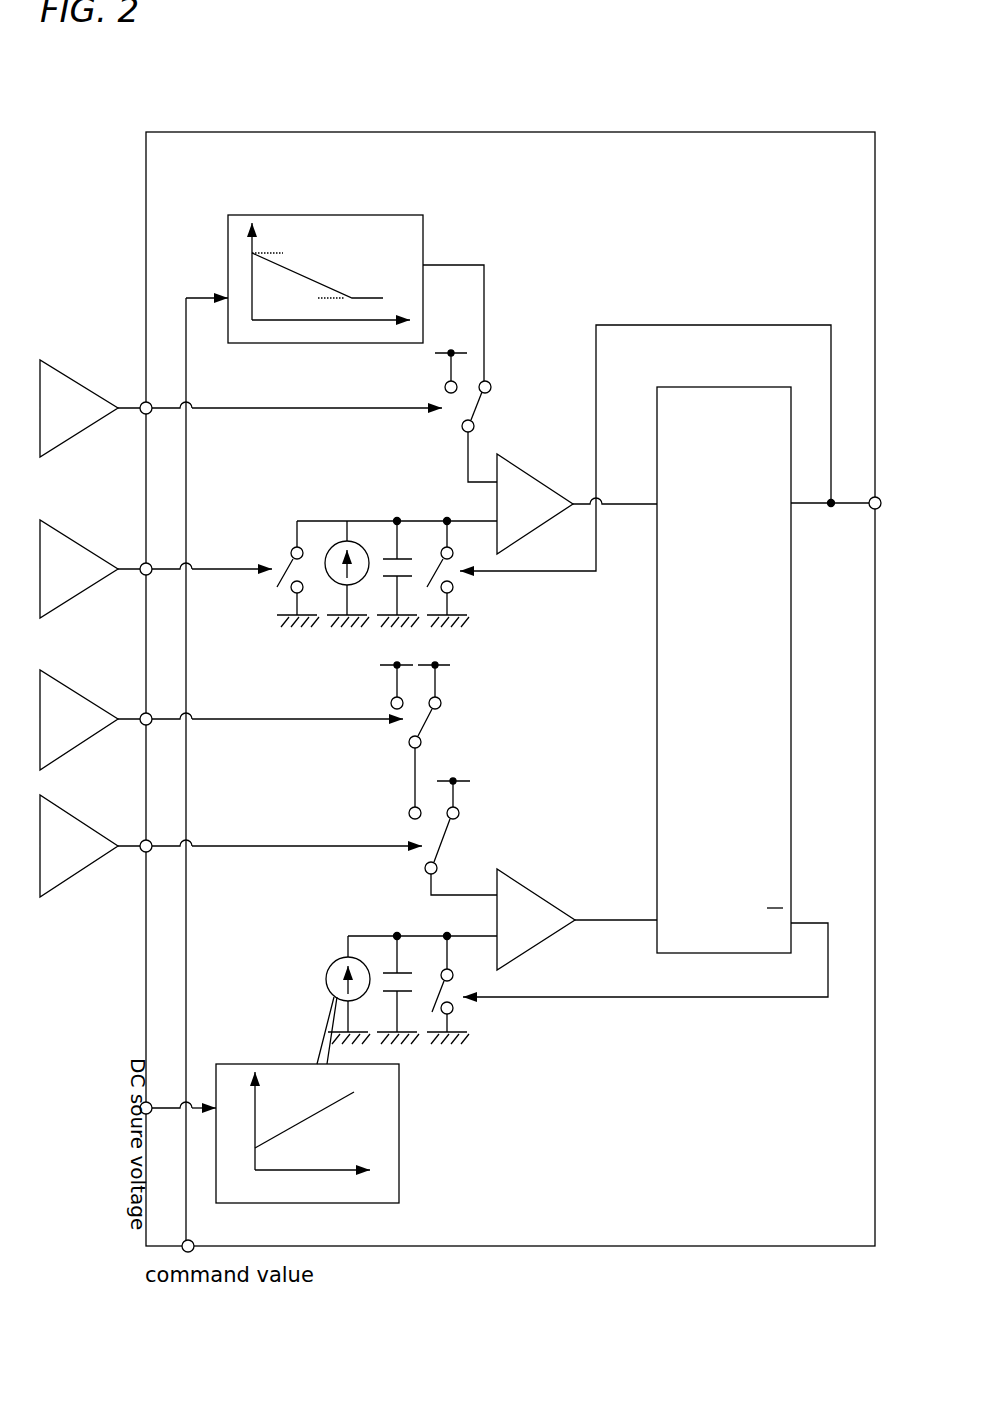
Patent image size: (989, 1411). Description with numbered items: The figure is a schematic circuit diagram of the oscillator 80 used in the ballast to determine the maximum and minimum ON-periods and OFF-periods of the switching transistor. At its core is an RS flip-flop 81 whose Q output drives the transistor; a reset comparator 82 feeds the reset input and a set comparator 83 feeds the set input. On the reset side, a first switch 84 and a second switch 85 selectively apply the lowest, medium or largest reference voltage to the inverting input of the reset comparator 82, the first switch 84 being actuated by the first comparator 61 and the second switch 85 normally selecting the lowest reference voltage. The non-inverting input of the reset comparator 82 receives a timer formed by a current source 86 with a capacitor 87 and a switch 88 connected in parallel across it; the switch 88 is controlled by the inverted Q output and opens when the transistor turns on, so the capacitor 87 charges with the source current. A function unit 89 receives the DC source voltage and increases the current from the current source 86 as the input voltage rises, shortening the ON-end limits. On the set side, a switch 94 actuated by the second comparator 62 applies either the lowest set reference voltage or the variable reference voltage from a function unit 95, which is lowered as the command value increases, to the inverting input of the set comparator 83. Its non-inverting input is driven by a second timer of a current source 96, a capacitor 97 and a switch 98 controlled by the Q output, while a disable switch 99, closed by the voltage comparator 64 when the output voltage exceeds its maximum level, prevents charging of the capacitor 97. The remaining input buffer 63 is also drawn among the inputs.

The oscillator 80 is at (510, 689).
The RS flip-flop 81 is at (721, 670).
The reset comparator 82 is at (577, 919).
The set comparator 83 is at (577, 504).
The first switch 84 is at (452, 840).
The second switch 85 is at (435, 725).
The current source 86 is at (322, 987).
The capacitor 87 is at (430, 972).
The switch 88 is at (460, 1006).
The function unit 89 is at (403, 1125).
The switch 94 is at (480, 403).
The function unit 95 is at (404, 214).
The current source 96 is at (325, 566).
The capacitor 97 is at (427, 552).
The switch 98 is at (462, 583).
The disable switch 99 is at (282, 560).
The first comparator 61 is at (88, 878).
The second comparator 62 is at (82, 440).
The buffer 63 is at (98, 742).
The voltage comparator 64 is at (97, 592).